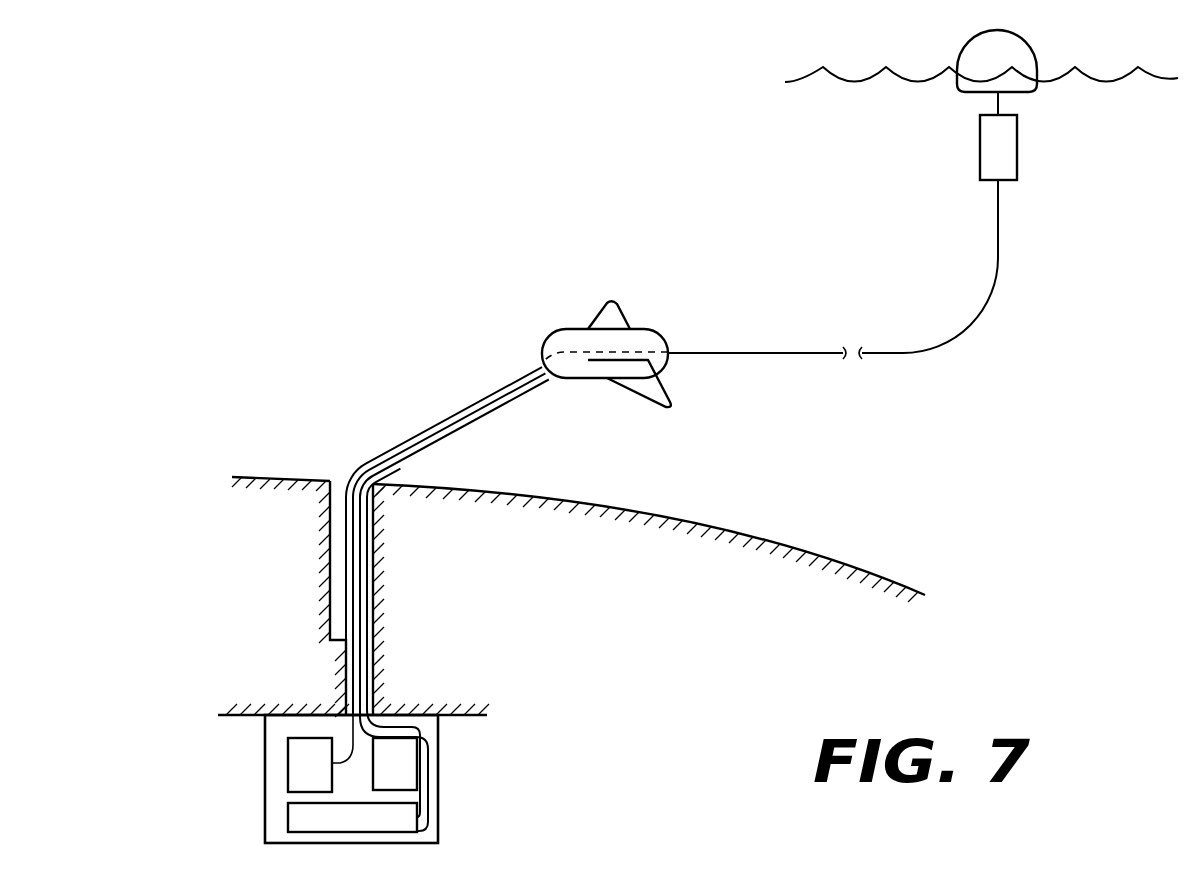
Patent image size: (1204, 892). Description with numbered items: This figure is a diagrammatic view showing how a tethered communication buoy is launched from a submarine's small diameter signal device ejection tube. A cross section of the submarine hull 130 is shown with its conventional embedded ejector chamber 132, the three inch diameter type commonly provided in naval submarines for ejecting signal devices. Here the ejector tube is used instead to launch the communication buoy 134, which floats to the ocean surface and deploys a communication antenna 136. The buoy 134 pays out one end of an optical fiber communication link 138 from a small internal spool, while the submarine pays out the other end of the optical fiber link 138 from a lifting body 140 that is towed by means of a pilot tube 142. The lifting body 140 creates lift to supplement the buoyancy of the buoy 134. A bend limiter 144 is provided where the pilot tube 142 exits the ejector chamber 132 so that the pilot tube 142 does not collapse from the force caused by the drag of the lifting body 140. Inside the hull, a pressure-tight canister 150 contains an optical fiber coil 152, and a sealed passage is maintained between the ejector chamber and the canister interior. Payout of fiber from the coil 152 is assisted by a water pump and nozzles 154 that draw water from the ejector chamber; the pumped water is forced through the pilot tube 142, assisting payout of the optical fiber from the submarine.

The submarine hull 130 is at (637, 513).
The ejector chamber 132 is at (328, 540).
The tethered communication buoy 134 is at (1012, 150).
The communication antenna 136 is at (1038, 92).
The optical fiber communication link 138 is at (775, 353).
The lifting body 140 is at (560, 338).
The pilot tube 142 is at (470, 400).
The bend limiter 144 is at (360, 464).
The pressure-tight canister 150 is at (252, 713).
The optical fiber coil 152 is at (300, 760).
The water pump and nozzles 154 is at (312, 820).